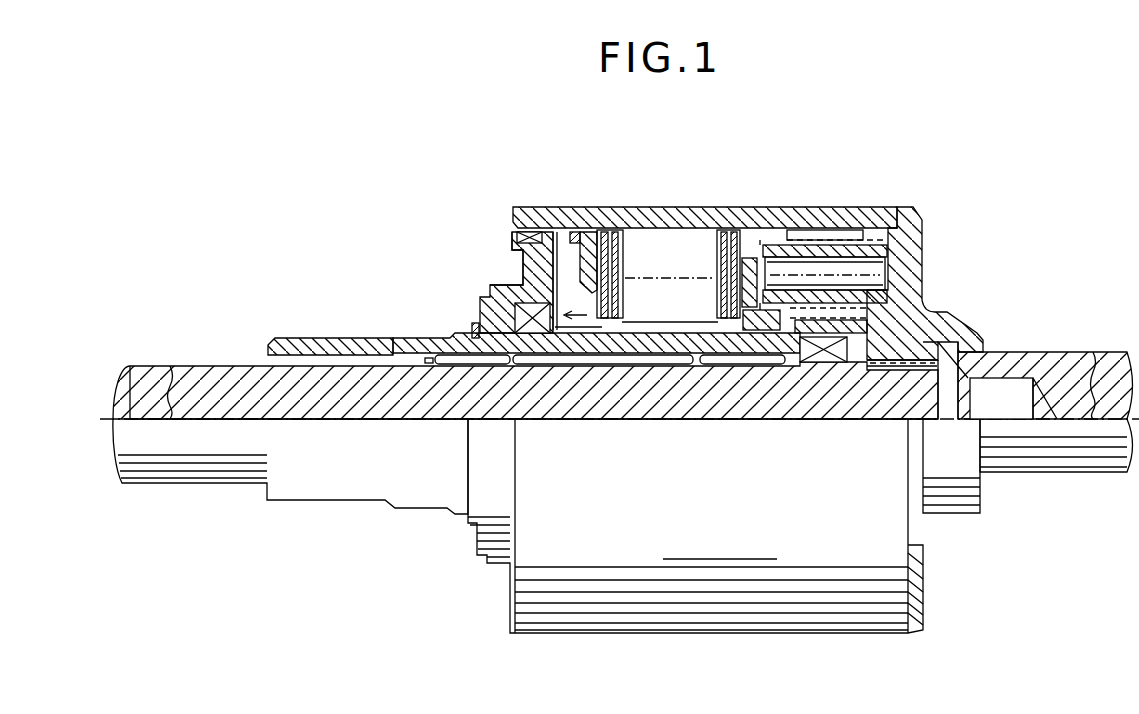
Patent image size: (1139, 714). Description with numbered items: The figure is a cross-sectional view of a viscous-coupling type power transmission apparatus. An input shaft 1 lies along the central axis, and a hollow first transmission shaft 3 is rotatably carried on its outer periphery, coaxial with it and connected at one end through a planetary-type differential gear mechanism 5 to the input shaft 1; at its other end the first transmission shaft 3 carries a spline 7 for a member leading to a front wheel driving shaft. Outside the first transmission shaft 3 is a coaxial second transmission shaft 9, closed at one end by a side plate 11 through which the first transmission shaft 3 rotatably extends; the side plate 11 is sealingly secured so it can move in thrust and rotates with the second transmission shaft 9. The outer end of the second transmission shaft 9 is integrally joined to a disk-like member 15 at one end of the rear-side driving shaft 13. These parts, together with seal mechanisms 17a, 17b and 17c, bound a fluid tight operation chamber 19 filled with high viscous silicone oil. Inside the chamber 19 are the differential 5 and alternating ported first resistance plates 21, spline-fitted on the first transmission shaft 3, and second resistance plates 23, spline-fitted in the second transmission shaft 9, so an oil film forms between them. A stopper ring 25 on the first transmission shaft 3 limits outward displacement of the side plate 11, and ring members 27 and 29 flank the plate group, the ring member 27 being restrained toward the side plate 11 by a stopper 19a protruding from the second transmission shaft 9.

The input shaft 1 is at (203, 366).
The first transmission shaft 3 is at (450, 335).
The differential gear mechanism 5 is at (866, 245).
The spline 7 is at (323, 338).
The second transmission shaft 9 is at (640, 207).
The side plate 11 is at (520, 257).
The rear-side driving shaft 13 is at (1060, 365).
The disk-like member 15 is at (913, 259).
The seal mechanism 17a is at (533, 232).
The seal mechanism 17b is at (504, 282).
The seal mechanism 17c is at (806, 362).
The operation chamber 19 is at (556, 235).
The stopper 19a is at (577, 232).
The first resistance plates 21 is at (722, 232).
The second resistance plates 23 is at (706, 232).
The stopper ring 25 is at (472, 325).
The ring member 27 is at (590, 232).
The ring member 29 is at (748, 258).